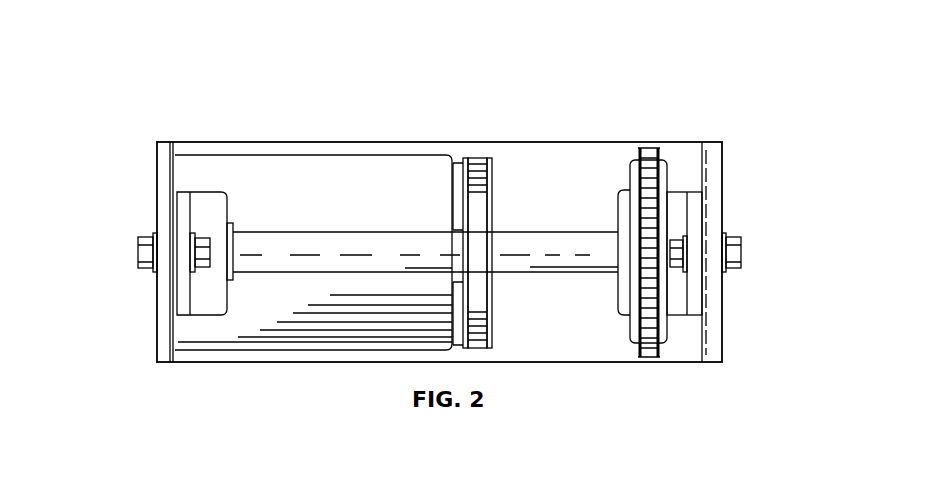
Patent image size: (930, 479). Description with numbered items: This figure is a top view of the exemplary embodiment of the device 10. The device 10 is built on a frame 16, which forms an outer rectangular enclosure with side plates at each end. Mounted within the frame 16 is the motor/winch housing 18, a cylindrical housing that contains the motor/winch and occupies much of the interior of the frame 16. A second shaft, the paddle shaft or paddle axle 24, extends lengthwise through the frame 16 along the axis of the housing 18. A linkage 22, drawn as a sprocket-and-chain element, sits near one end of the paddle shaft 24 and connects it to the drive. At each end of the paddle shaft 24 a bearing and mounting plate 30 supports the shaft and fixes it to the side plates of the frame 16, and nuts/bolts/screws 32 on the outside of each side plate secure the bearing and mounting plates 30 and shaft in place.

The device 10 is at (497, 0).
The frame 16 is at (617, 145).
The motor/winch housing 18 is at (312, 325).
The linkage 22 is at (660, 185).
The second shaft/paddle shaft/paddle axle 24 is at (332, 243).
The bearing and mounting plate 30 is at (185, 292).
The nuts/bolts/screws 32 is at (145, 237).